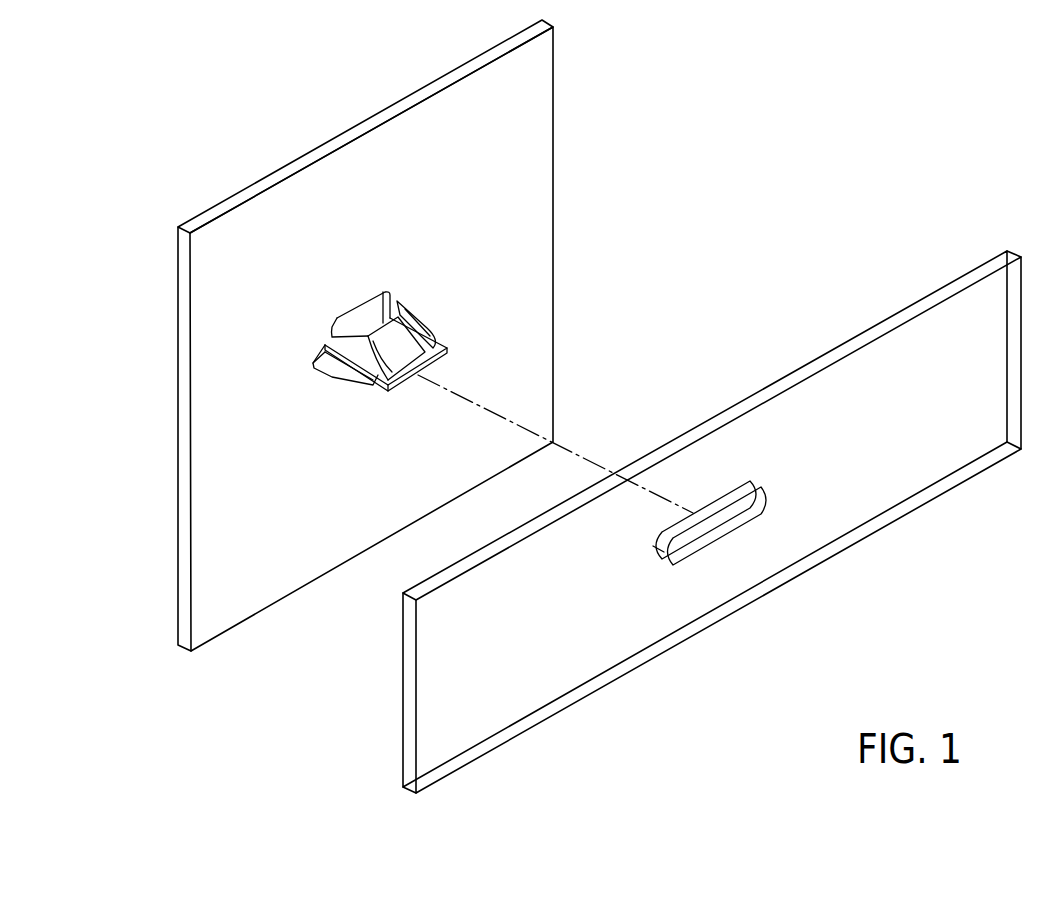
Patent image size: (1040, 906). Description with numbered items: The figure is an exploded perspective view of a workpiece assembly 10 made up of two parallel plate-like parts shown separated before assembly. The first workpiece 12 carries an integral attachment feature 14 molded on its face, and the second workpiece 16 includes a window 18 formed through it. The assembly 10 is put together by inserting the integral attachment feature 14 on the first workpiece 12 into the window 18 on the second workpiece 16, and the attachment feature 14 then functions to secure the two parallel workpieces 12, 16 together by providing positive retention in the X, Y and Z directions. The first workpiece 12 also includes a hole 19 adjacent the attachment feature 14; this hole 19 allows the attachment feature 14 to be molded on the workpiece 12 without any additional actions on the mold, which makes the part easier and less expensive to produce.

The workpiece assembly 10 is at (824, 116).
The first workpiece 12 is at (525, 193).
The integral attachment feature 14 is at (282, 458).
The second workpiece 16 is at (873, 363).
The window 18 is at (687, 550).
The hole 19 is at (350, 328).